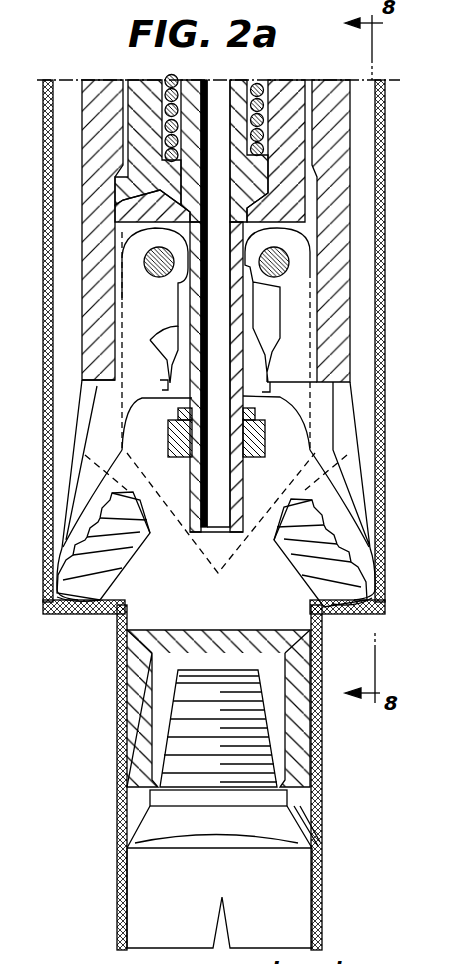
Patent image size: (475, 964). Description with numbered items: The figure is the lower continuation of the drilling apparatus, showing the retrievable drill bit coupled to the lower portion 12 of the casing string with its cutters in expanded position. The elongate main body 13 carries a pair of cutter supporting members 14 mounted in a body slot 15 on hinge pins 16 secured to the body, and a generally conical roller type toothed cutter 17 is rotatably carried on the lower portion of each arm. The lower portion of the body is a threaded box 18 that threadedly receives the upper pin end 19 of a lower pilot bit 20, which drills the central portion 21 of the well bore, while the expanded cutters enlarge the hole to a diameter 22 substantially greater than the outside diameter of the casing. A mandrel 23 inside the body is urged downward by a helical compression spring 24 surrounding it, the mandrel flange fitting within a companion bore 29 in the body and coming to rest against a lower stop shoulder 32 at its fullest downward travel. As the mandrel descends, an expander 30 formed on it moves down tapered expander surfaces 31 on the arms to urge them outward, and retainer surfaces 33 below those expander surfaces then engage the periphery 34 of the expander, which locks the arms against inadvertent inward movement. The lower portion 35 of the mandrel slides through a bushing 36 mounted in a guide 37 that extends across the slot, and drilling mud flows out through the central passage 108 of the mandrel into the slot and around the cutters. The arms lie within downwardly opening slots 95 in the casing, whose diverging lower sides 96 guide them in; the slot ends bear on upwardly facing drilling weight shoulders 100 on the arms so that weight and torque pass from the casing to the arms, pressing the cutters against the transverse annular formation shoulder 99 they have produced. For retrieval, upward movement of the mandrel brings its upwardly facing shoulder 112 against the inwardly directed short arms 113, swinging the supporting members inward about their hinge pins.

The diameter 22 is at (55, 95).
The central portion of the well bore 21 is at (305, 752).
The lower portion of the casing 12 is at (88, 287).
The cutter supporting member 14 is at (125, 333).
The main body 13 is at (137, 120).
The mandrel 23 is at (243, 80).
The helical compression spring 24 is at (168, 95).
The companion bore 29 is at (163, 135).
The lower stop shoulder 32 is at (177, 196).
The central passage 108 is at (216, 80).
The lower portion of the mandrel 35 is at (240, 524).
The hinge pin 16 is at (146, 257).
The short arm 113 is at (185, 270).
The upwardly facing shoulder 112 is at (155, 344).
The tapered expander surface 31 is at (270, 345).
The periphery of the expander 34 is at (283, 380).
The expander 30 is at (165, 373).
The drilling weight shoulder 100 is at (106, 382).
The retainer surface 33 is at (125, 404).
The downwardly opening slot 95 is at (85, 420).
The guide 37 is at (168, 430).
The bushing 36 is at (247, 456).
The lower sides of the slot 96 is at (167, 530).
The toothed cutter 17 is at (127, 572).
The formation shoulder 99 is at (80, 600).
The body slot 15 is at (147, 622).
The threaded box 18 is at (160, 713).
The upper pin end 19 is at (173, 755).
The lower pilot bit 20 is at (297, 878).